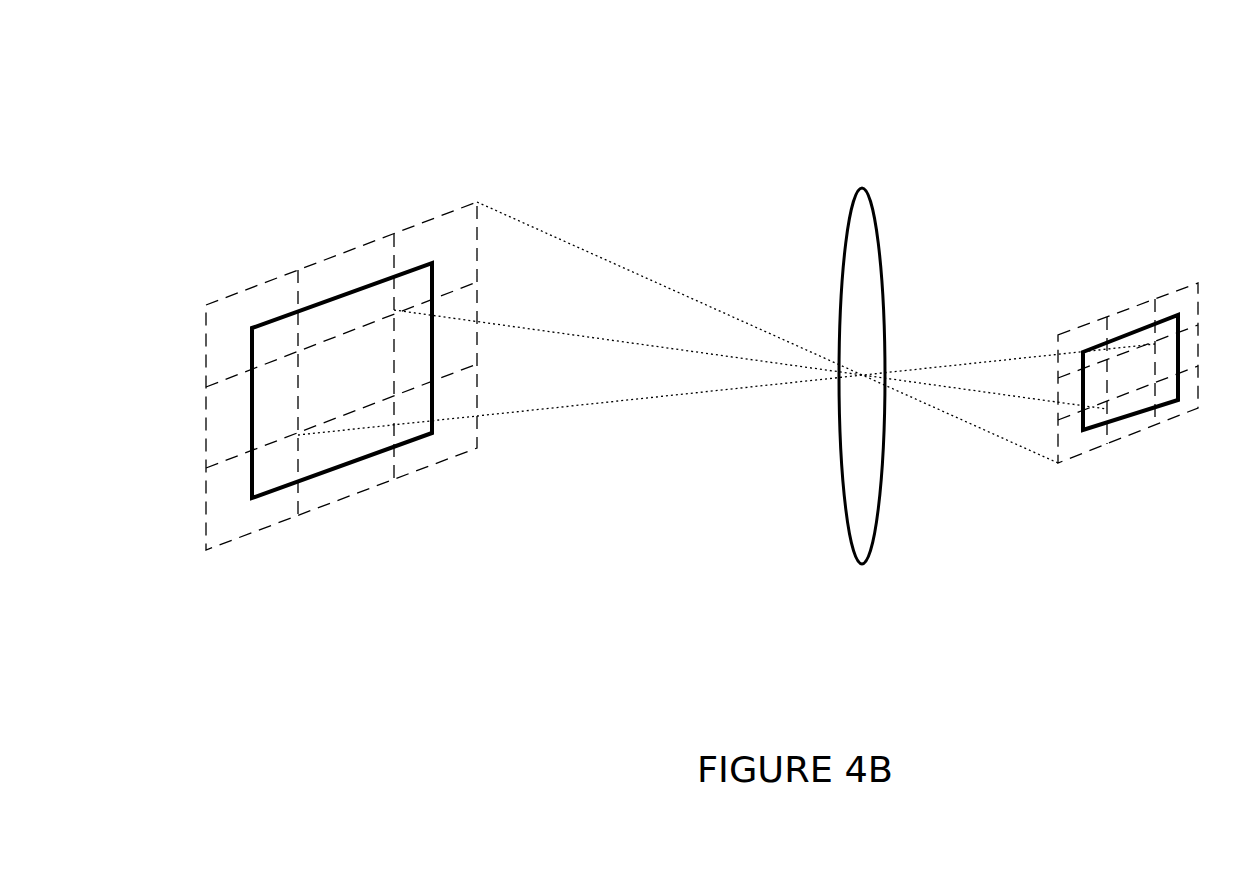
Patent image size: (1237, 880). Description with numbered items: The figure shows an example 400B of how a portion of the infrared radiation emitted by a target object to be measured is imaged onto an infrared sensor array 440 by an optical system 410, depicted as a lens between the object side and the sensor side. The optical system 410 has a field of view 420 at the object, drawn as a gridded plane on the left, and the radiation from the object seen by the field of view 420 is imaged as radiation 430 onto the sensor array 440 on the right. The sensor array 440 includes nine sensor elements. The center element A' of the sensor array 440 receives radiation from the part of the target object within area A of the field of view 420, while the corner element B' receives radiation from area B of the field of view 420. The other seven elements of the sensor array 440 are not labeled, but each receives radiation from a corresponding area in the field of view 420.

The example 400B is at (414, 75).
The field of view 420 is at (342, 470).
The optical system 410 is at (857, 562).
The radiation 430 is at (1138, 415).
The infrared sensor array 440 is at (1181, 290).